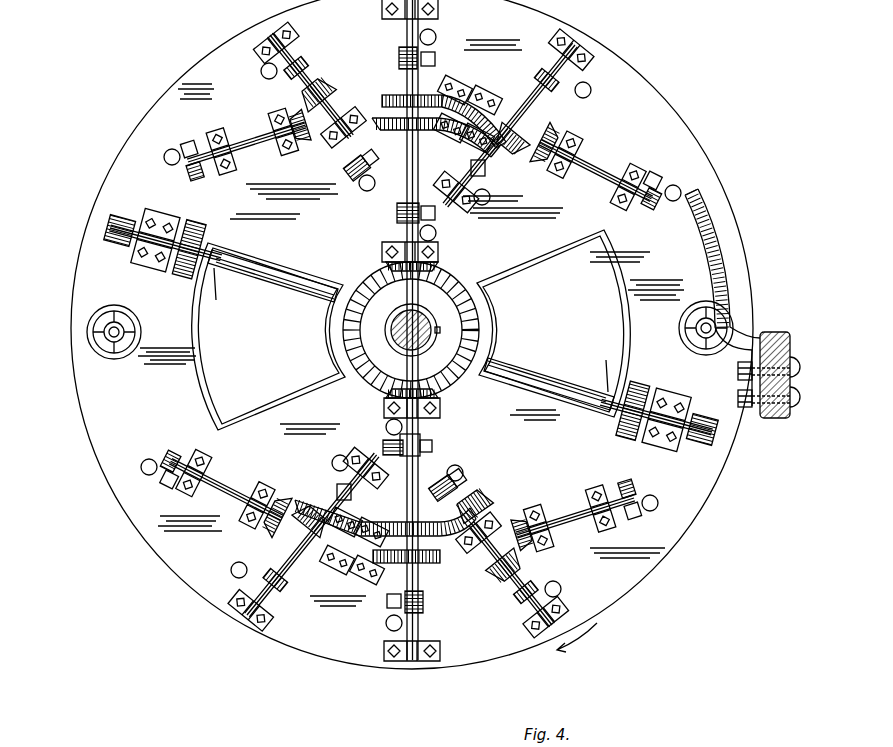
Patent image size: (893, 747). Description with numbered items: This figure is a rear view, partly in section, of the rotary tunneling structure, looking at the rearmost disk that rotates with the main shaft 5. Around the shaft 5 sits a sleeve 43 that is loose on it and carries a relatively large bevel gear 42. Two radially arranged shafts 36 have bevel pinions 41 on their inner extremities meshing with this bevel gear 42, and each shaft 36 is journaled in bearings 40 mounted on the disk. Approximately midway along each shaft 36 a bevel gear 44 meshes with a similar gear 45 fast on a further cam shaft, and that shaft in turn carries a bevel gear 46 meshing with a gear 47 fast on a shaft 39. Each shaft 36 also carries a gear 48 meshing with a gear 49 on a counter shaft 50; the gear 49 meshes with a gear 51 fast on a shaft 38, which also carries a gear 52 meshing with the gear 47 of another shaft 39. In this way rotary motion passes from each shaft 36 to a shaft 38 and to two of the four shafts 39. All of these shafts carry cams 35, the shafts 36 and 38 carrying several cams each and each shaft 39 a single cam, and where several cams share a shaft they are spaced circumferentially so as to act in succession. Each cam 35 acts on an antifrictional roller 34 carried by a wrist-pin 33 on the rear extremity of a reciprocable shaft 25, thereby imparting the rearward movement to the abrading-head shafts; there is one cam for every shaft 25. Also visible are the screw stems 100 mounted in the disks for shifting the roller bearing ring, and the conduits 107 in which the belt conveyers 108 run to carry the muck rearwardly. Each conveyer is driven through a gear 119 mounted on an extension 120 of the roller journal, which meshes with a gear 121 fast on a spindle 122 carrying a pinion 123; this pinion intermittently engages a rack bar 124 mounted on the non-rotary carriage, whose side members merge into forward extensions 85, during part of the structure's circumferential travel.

The main shaft 5 is at (395, 328).
The reciprocable shaft 25 is at (164, 158).
The wrist-pin 33 is at (166, 152).
The antifrictional roller 34 is at (186, 146).
The cam 35 is at (198, 182).
The radial shaft 36 is at (419, 158).
The shaft 38 is at (528, 122).
The shaft 39 is at (258, 148).
The bearing 40 is at (262, 40).
The bevel pinion 41 is at (384, 262).
The bevel gear 42 is at (445, 285).
The sleeve 43 is at (440, 325).
The bevel gear 44 is at (410, 130).
The bevel gear 45 is at (356, 180).
The bevel gear 46 is at (316, 72).
The bevel gear 47 is at (305, 140).
The gear 48 is at (384, 92).
The gear 49 is at (462, 80).
The counter shaft 50 is at (540, 80).
The gear 51 is at (522, 155).
The gear 52 is at (560, 66).
The forward extension 85 is at (772, 330).
The screw stem 100 is at (112, 345).
The conduit 107 is at (411, 330).
The belt conveyer 108 is at (411, 330).
The gear 119 is at (214, 245).
The roller journal extension 120 is at (606, 420).
The gear 121 is at (182, 270).
The spindle 122 is at (140, 248).
The pinion 123 is at (108, 240).
The rack bar 124 is at (712, 210).